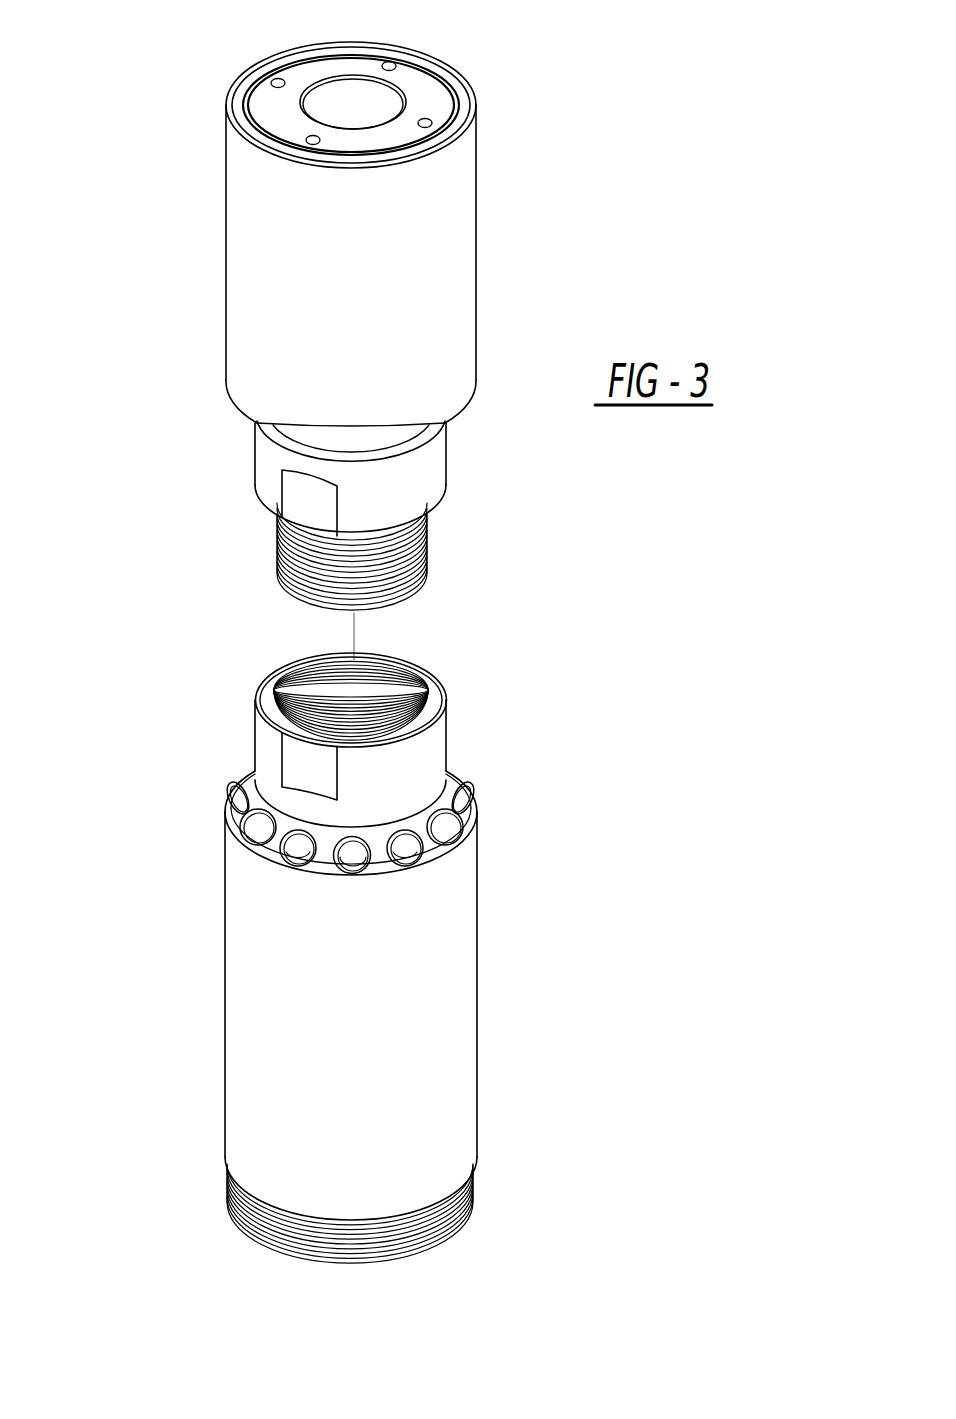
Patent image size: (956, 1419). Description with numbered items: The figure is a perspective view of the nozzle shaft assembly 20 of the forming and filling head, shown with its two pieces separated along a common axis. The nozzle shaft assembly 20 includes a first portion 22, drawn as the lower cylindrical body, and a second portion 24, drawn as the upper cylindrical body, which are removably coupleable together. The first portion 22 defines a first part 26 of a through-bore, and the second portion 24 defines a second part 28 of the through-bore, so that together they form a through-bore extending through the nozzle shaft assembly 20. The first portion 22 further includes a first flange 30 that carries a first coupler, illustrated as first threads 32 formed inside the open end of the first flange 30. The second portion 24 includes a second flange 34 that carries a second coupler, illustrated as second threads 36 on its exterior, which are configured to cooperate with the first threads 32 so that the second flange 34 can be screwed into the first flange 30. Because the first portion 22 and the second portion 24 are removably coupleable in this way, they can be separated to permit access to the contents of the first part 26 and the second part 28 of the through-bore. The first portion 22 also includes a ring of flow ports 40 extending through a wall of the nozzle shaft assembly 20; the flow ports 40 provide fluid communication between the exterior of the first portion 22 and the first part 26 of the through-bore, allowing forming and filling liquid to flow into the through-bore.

The nozzle shaft assembly 20 is at (125, 385).
The first portion 22 is at (250, 1011).
The second portion 24 is at (271, 283).
The first part of the through-bore 26 is at (402, 702).
The second part of the through-bore 28 is at (382, 102).
The first flange 30 is at (418, 765).
The first threads 32 is at (302, 699).
The second flange 34 is at (417, 544).
The second threads 36 is at (312, 555).
The flow ports 40 is at (452, 840).